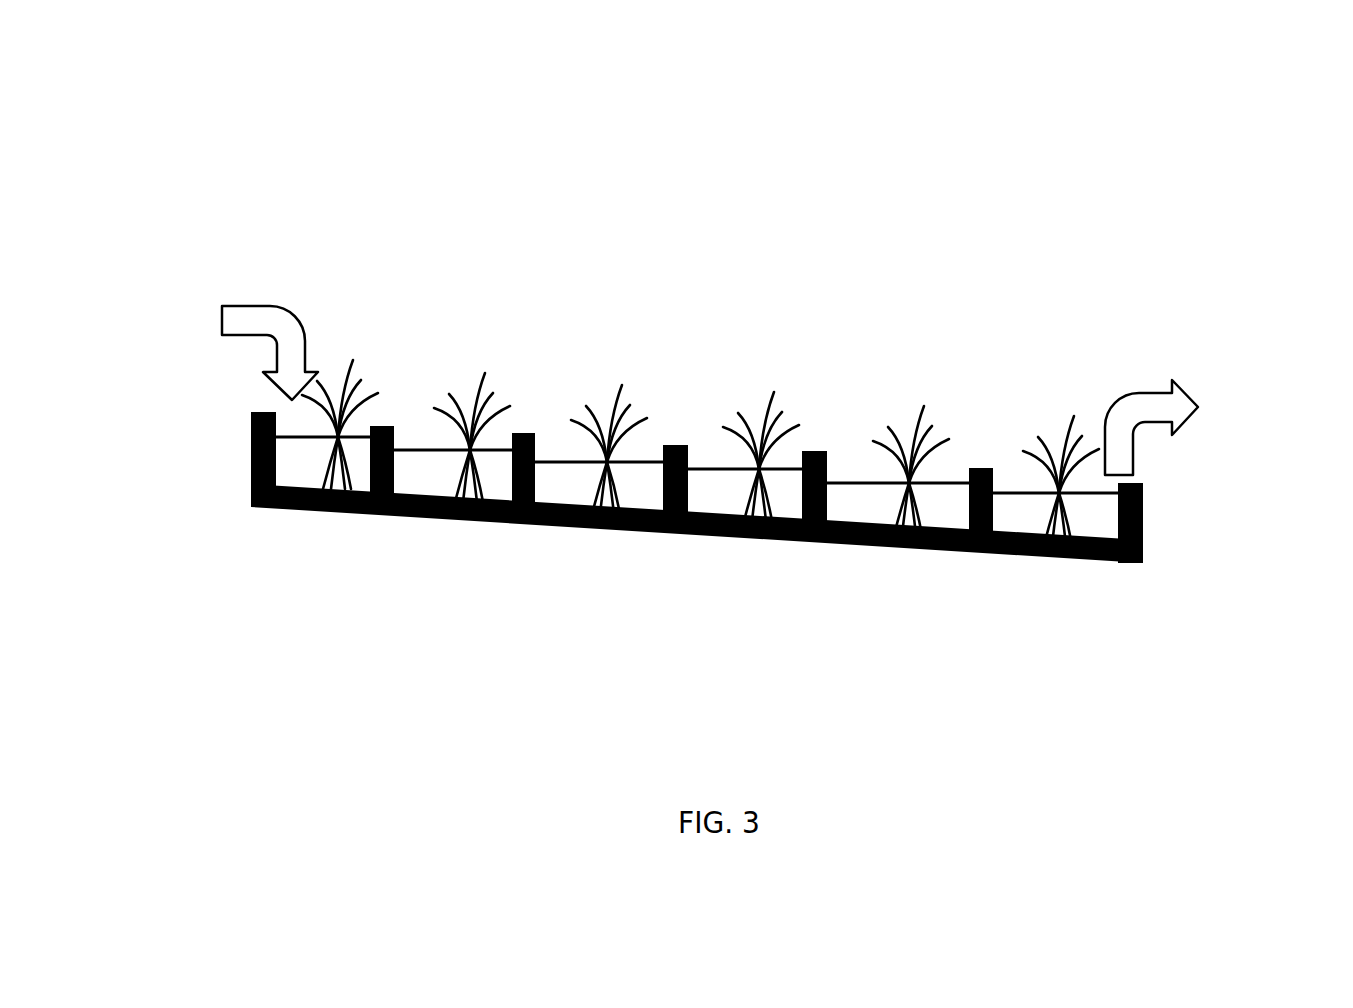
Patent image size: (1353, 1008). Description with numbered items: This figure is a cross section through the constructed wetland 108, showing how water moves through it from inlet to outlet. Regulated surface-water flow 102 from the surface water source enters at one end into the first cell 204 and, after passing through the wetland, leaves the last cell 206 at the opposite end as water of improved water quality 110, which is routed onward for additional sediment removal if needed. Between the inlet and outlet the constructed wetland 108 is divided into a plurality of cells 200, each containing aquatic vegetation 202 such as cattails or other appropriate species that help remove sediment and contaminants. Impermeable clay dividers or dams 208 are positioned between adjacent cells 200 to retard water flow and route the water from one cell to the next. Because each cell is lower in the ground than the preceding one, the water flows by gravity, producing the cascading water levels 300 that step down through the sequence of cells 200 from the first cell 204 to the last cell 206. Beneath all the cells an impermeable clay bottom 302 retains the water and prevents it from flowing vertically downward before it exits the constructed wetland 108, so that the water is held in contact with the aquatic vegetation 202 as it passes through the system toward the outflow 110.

The water flow 102 is at (222, 320).
The constructed wetland 108 is at (1098, 150).
The water of improved water quality 110 is at (1190, 398).
The cells 200 is at (423, 475).
The aquatic vegetation 202 is at (480, 420).
The first cell 204 is at (298, 463).
The last cell 206 is at (1017, 517).
The impermeable clay dividers or dams 208 is at (977, 468).
The cascading water levels 300 is at (430, 450).
The impermeable clay bottom 302 is at (795, 542).